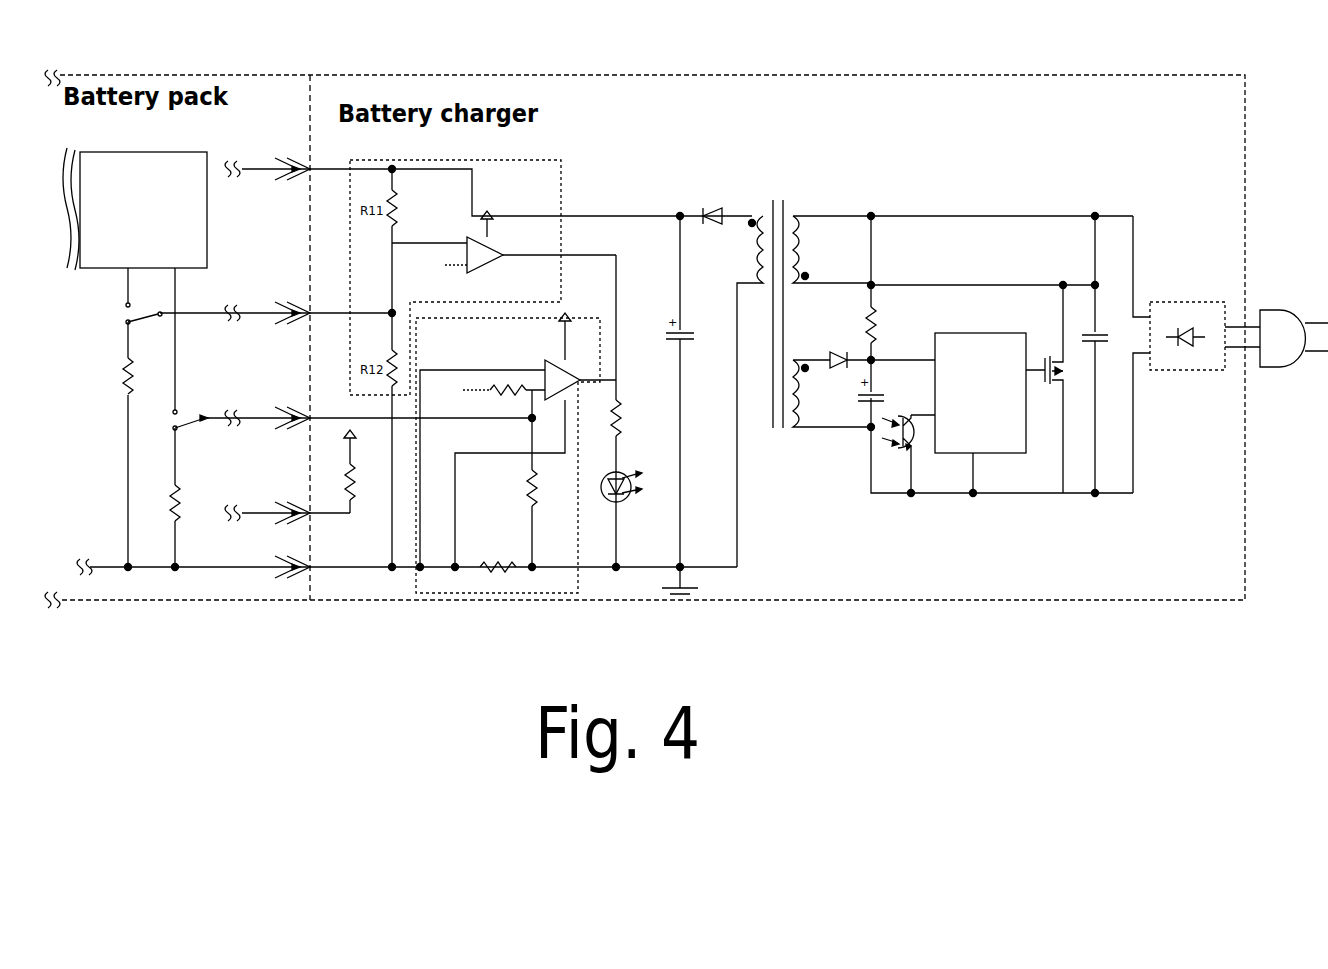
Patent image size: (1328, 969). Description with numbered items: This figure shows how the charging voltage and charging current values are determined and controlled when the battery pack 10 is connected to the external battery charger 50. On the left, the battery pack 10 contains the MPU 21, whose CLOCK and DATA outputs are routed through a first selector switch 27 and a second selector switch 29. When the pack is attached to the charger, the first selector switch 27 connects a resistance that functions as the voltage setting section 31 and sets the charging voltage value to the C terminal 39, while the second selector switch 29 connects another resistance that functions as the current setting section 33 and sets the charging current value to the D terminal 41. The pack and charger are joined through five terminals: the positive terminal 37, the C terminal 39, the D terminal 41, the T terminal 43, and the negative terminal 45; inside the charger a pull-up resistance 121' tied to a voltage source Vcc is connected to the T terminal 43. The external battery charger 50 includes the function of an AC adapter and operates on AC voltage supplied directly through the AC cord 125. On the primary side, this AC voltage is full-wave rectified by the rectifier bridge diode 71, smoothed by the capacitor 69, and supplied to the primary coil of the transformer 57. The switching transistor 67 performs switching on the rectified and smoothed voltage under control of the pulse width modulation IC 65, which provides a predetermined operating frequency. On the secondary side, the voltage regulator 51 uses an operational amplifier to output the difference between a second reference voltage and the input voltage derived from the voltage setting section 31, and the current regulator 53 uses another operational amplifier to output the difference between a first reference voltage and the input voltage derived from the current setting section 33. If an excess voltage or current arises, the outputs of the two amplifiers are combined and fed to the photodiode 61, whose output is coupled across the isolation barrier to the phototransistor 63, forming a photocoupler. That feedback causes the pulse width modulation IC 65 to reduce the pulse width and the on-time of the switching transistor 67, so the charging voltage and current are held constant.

The battery pack 10 is at (90, 138).
The microprocessor unit (MPU) 21 is at (208, 198).
The first selector switch (SW1) 27 is at (122, 313).
The second selector switch (SW2) 29 is at (173, 414).
The voltage setting section (Vset) 31 is at (95, 362).
The current setting section (Iset) 33 is at (172, 480).
The positive terminal 37 is at (292, 164).
The C terminal 39 is at (290, 310).
The D terminal 41 is at (290, 414).
The T terminal 43 is at (290, 506).
The negative terminal 45 is at (290, 578).
The external battery charger 50 is at (365, 157).
The voltage regulator 51 is at (543, 157).
The current regulator 53 is at (600, 318).
The transformer 57 is at (787, 205).
The photodiode (PD1) 61 is at (628, 478).
The phototransistor (TR1) 63 is at (906, 455).
The pulse width modulation (PWM) IC 65 is at (960, 332).
The switching transistor 67 is at (1048, 380).
The capacitor 69 is at (1100, 335).
The rectifier bridge diode 71 is at (1197, 302).
The pull-up resistance 121' is at (347, 496).
The AC cord 125 is at (1248, 327).